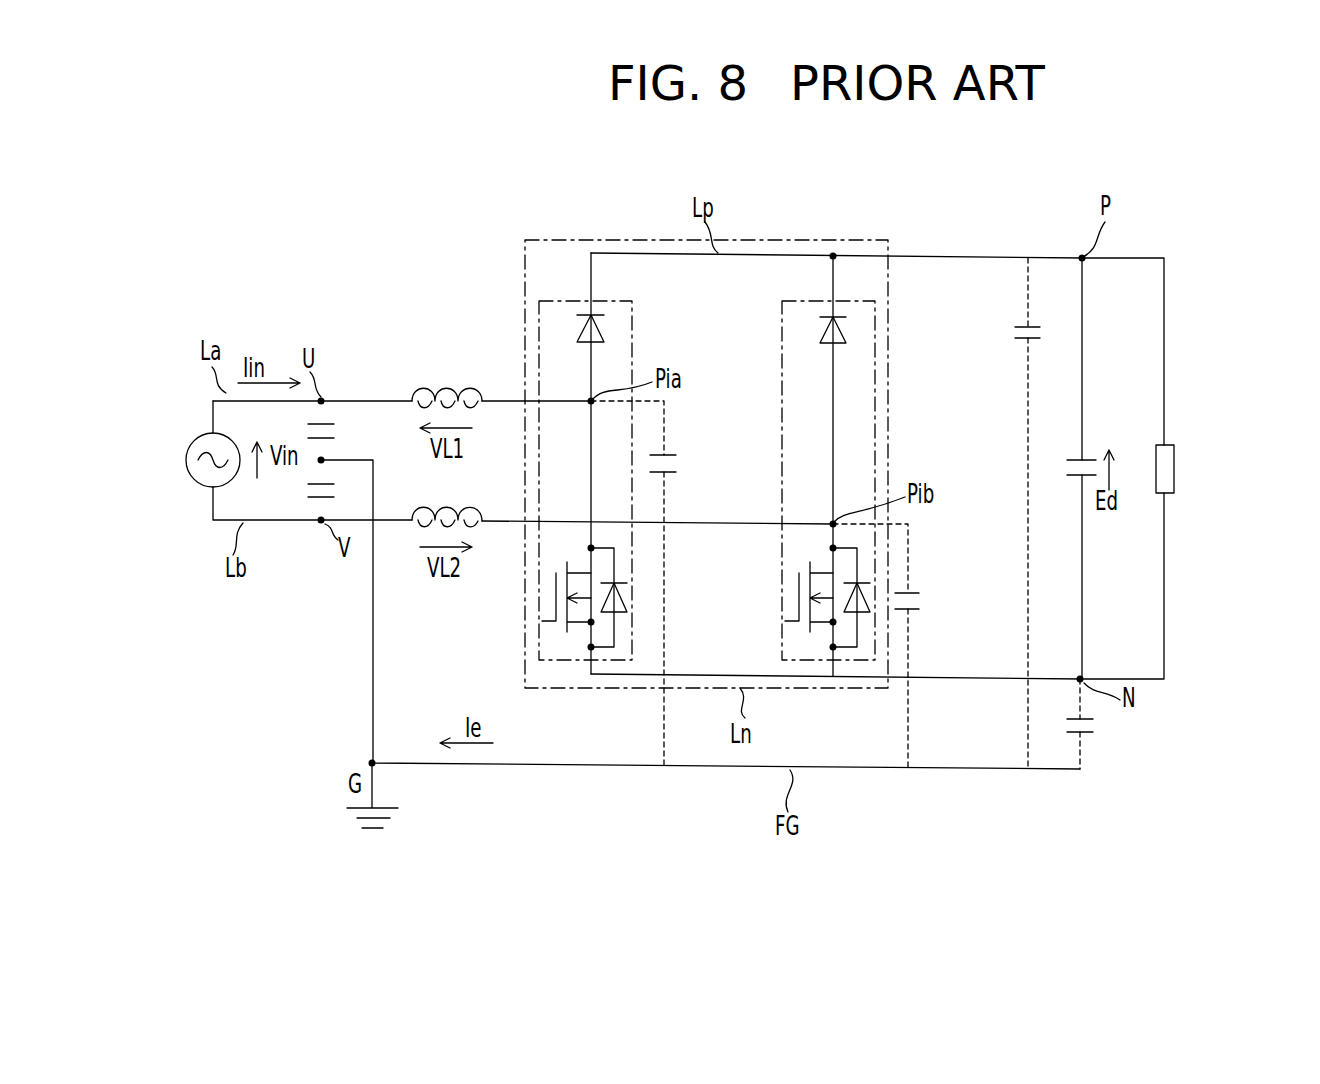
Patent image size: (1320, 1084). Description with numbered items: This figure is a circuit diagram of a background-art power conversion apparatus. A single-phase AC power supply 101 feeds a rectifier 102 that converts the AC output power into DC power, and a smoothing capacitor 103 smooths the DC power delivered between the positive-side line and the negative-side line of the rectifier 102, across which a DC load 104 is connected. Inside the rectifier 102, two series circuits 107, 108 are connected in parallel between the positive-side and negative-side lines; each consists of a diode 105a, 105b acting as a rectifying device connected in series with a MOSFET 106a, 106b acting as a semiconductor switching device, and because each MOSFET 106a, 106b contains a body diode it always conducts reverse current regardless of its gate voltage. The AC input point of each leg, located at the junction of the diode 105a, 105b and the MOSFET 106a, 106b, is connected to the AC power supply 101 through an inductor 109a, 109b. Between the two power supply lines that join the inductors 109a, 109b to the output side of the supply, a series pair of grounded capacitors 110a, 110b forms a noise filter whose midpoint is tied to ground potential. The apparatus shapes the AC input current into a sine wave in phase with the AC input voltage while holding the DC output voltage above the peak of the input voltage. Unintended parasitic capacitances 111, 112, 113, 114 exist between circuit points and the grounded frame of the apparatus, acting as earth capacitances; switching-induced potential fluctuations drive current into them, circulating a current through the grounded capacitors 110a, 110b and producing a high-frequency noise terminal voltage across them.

The single-phase AC power supply 101 is at (181, 430).
The rectifier 102 is at (706, 423).
The smoothing capacitor 103 is at (1098, 434).
The DC load 104 is at (1201, 469).
The diode 105a is at (635, 329).
The diode 105b is at (881, 343).
The MOSFET 106a is at (542, 603).
The MOSFET 106b is at (790, 603).
The series circuit 107 is at (583, 424).
The series circuit 108 is at (826, 424).
The inductor 109a is at (460, 364).
The inductor 109b is at (464, 493).
The grounded capacitor 110a is at (354, 439).
The grounded capacitor 110b is at (304, 531).
The parasitic capacitance 111 is at (678, 583).
The parasitic capacitance 112 is at (919, 645).
The parasitic capacitance 113 is at (987, 513).
The parasitic capacitance 114 is at (1114, 724).